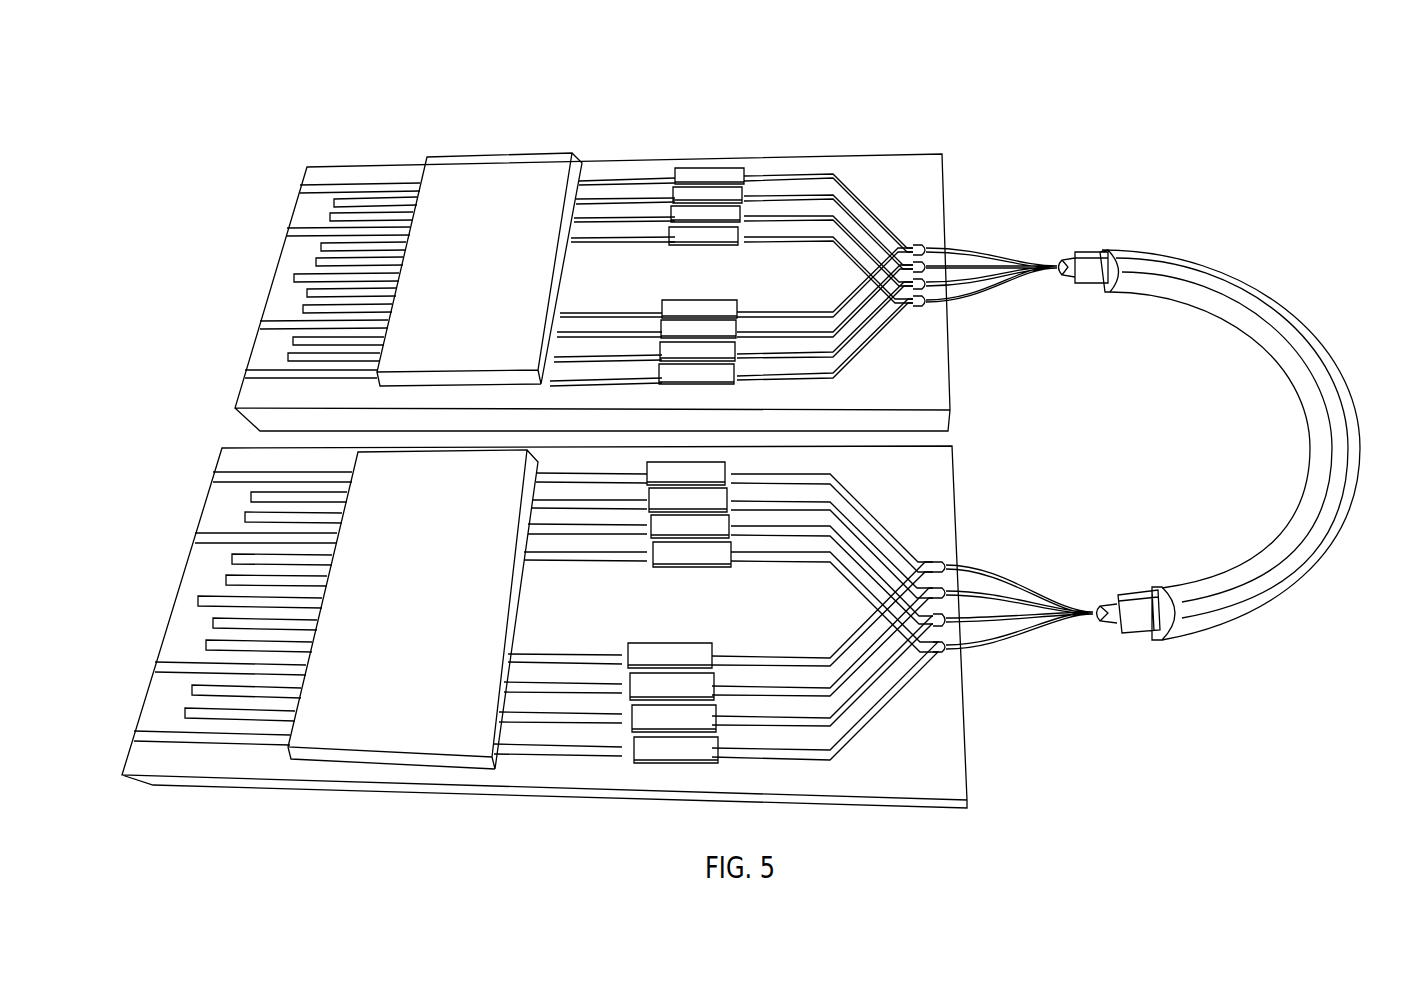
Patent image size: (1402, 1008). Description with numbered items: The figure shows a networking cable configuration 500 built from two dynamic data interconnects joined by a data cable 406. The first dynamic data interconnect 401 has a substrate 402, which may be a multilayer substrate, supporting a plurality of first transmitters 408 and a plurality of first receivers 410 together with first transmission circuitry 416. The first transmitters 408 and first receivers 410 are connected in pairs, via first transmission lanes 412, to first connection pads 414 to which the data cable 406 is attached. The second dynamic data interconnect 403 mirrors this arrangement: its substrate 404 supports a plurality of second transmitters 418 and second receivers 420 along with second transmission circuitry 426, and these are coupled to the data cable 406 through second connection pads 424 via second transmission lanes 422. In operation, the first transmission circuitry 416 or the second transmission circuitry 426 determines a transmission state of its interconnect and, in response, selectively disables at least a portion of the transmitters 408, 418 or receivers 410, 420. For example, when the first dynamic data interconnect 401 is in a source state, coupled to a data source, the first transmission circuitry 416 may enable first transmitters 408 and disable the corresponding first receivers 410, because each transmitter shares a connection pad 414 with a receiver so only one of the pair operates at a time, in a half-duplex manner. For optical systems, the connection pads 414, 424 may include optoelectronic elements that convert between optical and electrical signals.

The sensor system 500 is at (735, 435).
The first dynamic data interconnect 401 is at (571, 263).
The substrate 402 is at (277, 214).
The second dynamic data interconnect 403 is at (580, 629).
The substrate 404 is at (160, 636).
The data cable 406 is at (1313, 335).
The first transmitters 408 is at (677, 234).
The first receivers 410 is at (656, 374).
The first transmission lanes 412 is at (861, 252).
The first connection pads 414 is at (926, 301).
The first transmission circuitry 416 is at (478, 167).
The second transmitters 418 is at (636, 549).
The second receivers 420 is at (618, 743).
The second transmission lanes 422 is at (802, 553).
The second connection pads 424 is at (938, 640).
The second transmission circuitry 426 is at (396, 726).